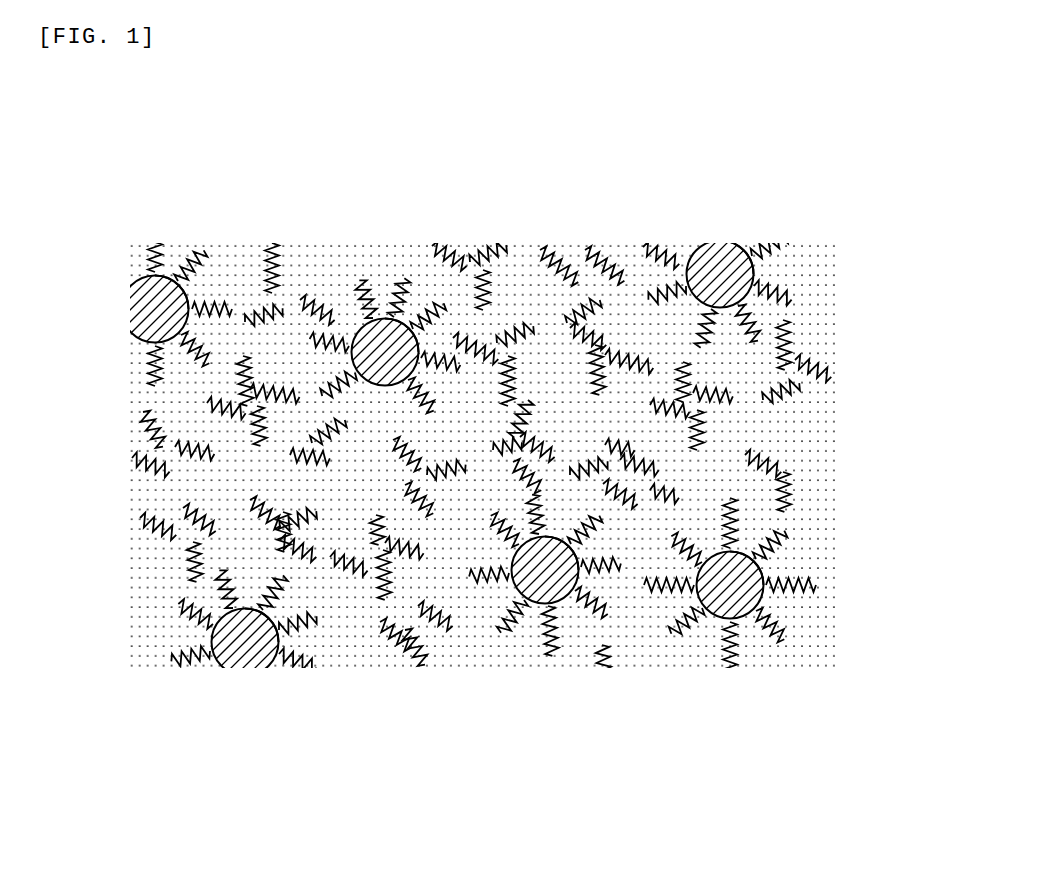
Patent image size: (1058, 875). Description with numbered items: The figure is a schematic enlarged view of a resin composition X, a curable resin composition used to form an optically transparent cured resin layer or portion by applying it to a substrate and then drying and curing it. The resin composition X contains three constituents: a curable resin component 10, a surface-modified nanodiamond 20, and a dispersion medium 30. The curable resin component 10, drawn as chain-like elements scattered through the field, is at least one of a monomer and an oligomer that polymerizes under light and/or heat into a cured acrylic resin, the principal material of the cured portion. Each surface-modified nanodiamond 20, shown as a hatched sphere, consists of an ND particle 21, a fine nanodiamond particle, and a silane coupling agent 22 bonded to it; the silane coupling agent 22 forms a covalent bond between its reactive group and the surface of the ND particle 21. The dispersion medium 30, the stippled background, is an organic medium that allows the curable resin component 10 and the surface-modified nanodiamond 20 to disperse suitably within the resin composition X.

The resin composition X is at (782, 168).
The curable resin component 10 is at (270, 258).
The surface-modified nanodiamond 20 is at (128, 300).
The ND particle 21 is at (152, 328).
The silane coupling agent 22 is at (145, 262).
The dispersion medium 30 is at (532, 290).